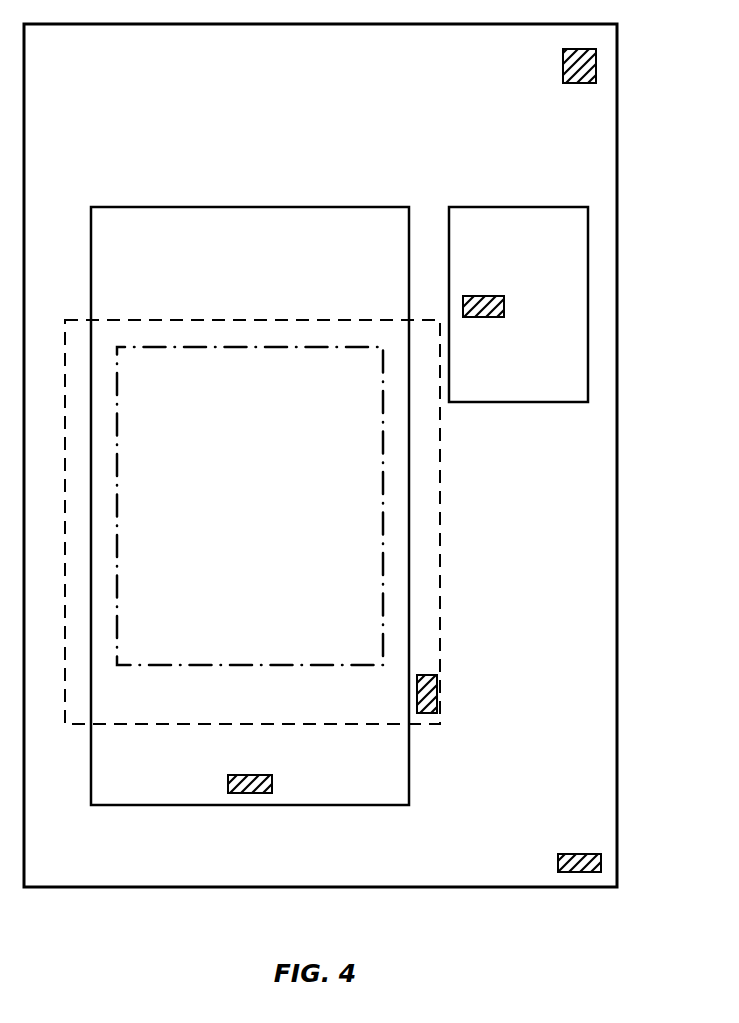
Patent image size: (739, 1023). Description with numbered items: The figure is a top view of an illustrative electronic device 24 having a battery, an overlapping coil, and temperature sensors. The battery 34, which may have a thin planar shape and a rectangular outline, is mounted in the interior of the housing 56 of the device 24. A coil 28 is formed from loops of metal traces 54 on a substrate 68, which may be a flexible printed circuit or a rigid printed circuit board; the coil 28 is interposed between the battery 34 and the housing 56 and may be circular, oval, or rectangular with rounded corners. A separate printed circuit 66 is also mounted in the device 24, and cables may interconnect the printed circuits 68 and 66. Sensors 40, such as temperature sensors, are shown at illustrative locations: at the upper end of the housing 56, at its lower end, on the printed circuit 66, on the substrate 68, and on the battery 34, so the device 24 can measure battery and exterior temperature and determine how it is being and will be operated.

The electronic device 24 is at (650, 497).
The coil 28 is at (362, 678).
The battery 34 is at (250, 207).
The sensors 40 is at (563, 63).
The metal traces 54 is at (241, 348).
The housing 56 is at (617, 630).
The printed circuit 66 is at (507, 207).
The substrate 68 is at (440, 638).